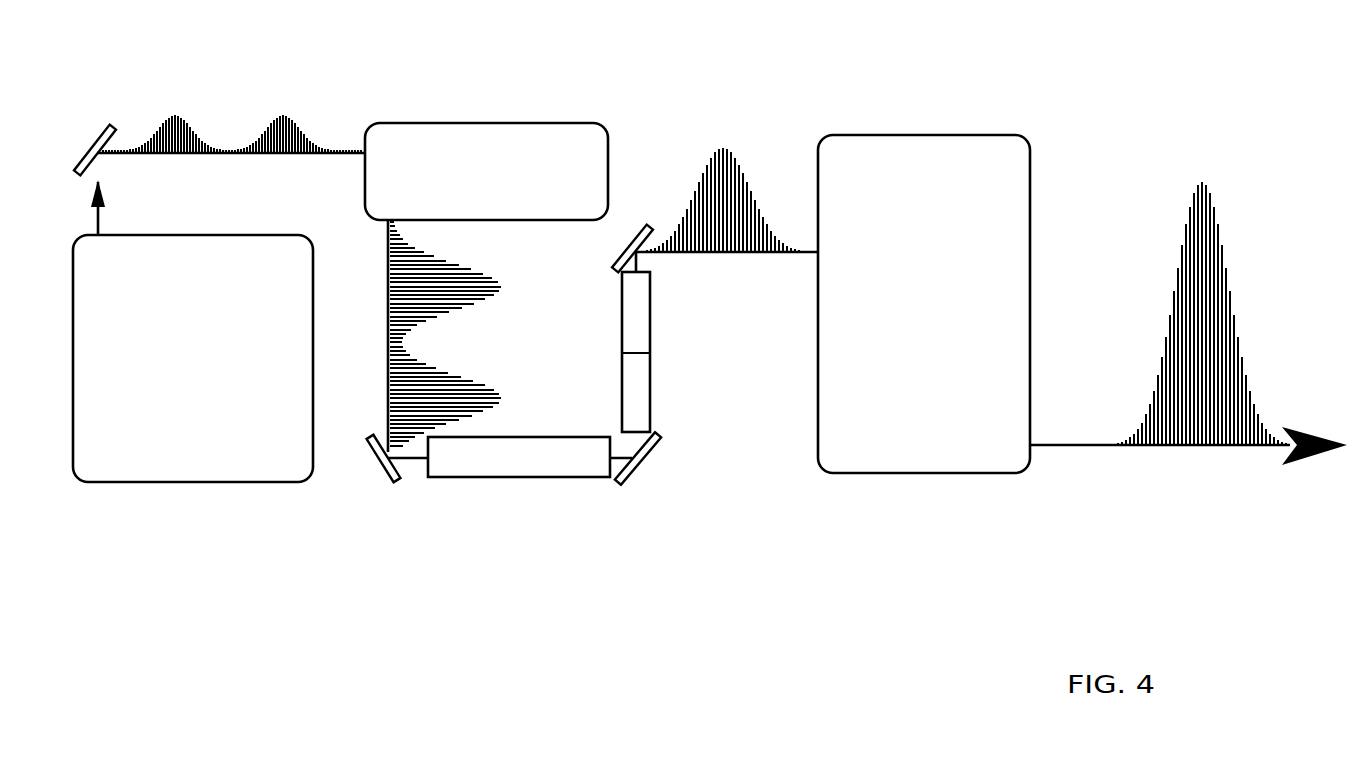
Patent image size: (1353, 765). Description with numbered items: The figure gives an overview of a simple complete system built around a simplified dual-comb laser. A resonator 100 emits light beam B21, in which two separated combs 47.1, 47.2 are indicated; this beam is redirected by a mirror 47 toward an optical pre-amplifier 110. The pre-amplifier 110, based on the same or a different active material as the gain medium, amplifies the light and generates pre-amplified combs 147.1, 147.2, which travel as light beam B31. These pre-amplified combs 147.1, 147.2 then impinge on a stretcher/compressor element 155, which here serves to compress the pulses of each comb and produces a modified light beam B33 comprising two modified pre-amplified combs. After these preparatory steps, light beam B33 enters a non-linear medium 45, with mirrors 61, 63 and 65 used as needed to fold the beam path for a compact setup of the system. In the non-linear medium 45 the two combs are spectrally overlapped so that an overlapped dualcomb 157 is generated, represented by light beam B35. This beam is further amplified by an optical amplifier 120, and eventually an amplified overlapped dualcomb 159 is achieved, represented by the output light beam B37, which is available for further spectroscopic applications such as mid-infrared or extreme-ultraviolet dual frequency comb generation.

The resonator 100 is at (210, 373).
The optical pre-amplifier 110 is at (505, 182).
The optical amplifier 120 is at (942, 293).
The stretcher/compressor element 155 is at (535, 469).
The non-linear medium 45 is at (636, 352).
The mirror 47 is at (93, 147).
The comb 47.1 is at (173, 114).
The comb 47.2 is at (282, 114).
The mirror 61 is at (388, 474).
The mirror 63 is at (644, 464).
The mirror 65 is at (632, 229).
The pre-amplified comb 147.1 is at (499, 300).
The pre-amplified comb 147.2 is at (499, 408).
The overlapped dualcomb 157 is at (710, 141).
The amplified overlapped dualcomb 159 is at (1195, 176).
The light beam B21 is at (347, 147).
The light beam B31 is at (381, 358).
The modified light beam B33 is at (618, 462).
The light beam B35 is at (800, 242).
The light beam B37 is at (1090, 439).